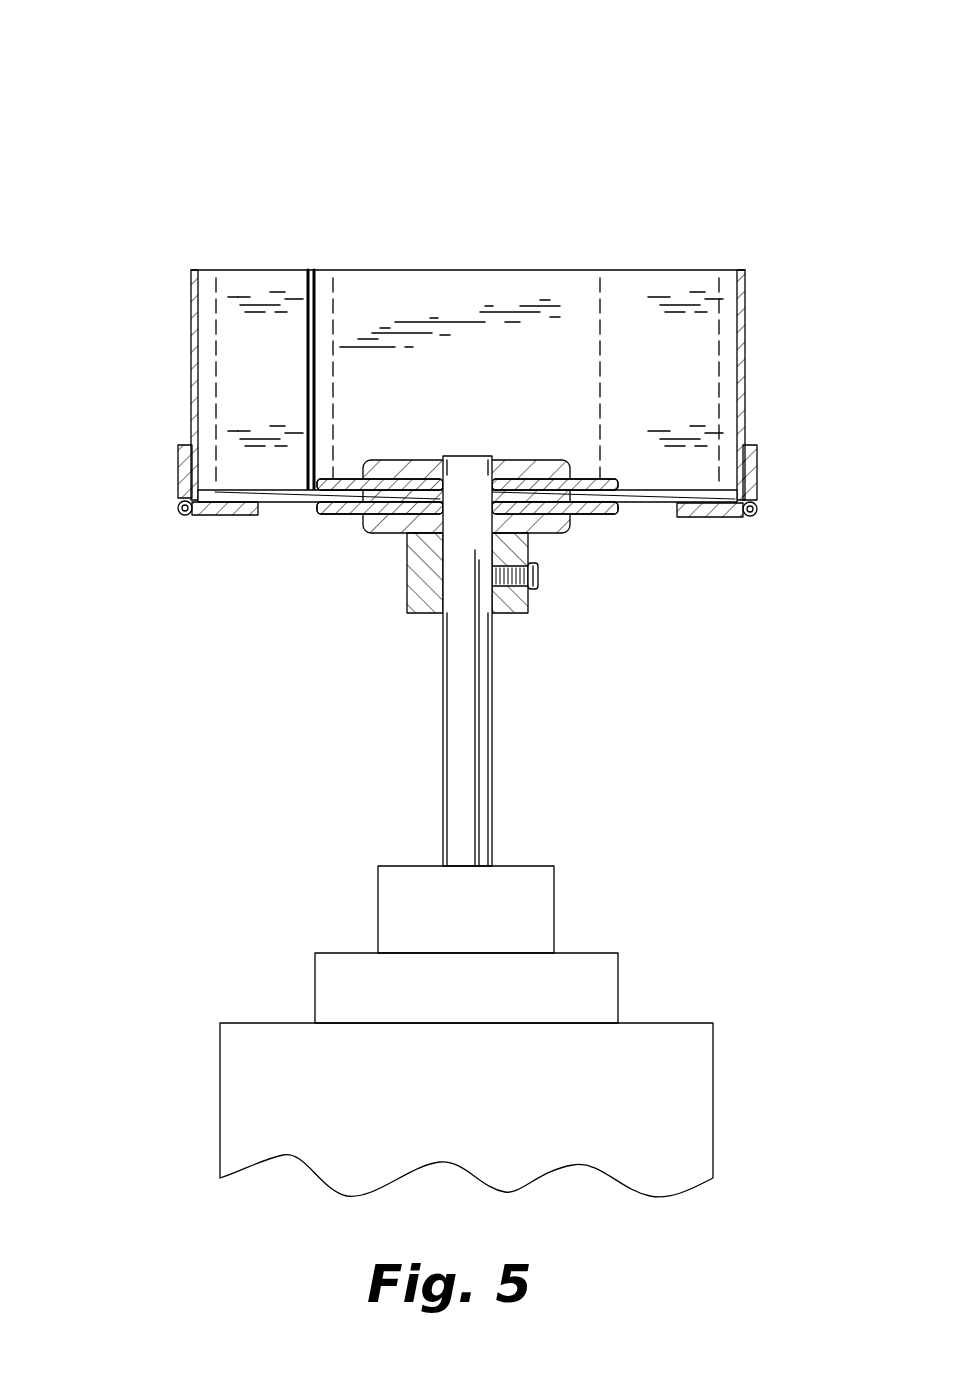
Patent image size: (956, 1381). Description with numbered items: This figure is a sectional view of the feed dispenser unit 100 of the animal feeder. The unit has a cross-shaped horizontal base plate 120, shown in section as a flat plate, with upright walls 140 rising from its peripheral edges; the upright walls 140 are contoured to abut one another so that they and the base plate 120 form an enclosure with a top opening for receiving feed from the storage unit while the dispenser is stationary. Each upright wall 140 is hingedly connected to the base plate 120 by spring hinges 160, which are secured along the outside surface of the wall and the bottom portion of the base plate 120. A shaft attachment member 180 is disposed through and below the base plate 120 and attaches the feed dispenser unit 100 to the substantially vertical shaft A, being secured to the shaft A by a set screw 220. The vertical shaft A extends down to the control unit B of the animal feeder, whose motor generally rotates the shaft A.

The feed dispenser unit 100 is at (91, 87).
The horizontal base plate 120 is at (650, 505).
The upright walls 140 is at (191, 358).
The spring hinges 160 is at (178, 476).
The shaft attachment member 180 is at (366, 460).
The set screw 220 is at (540, 590).
The vertical shaft A is at (443, 750).
The control unit B is at (713, 1076).